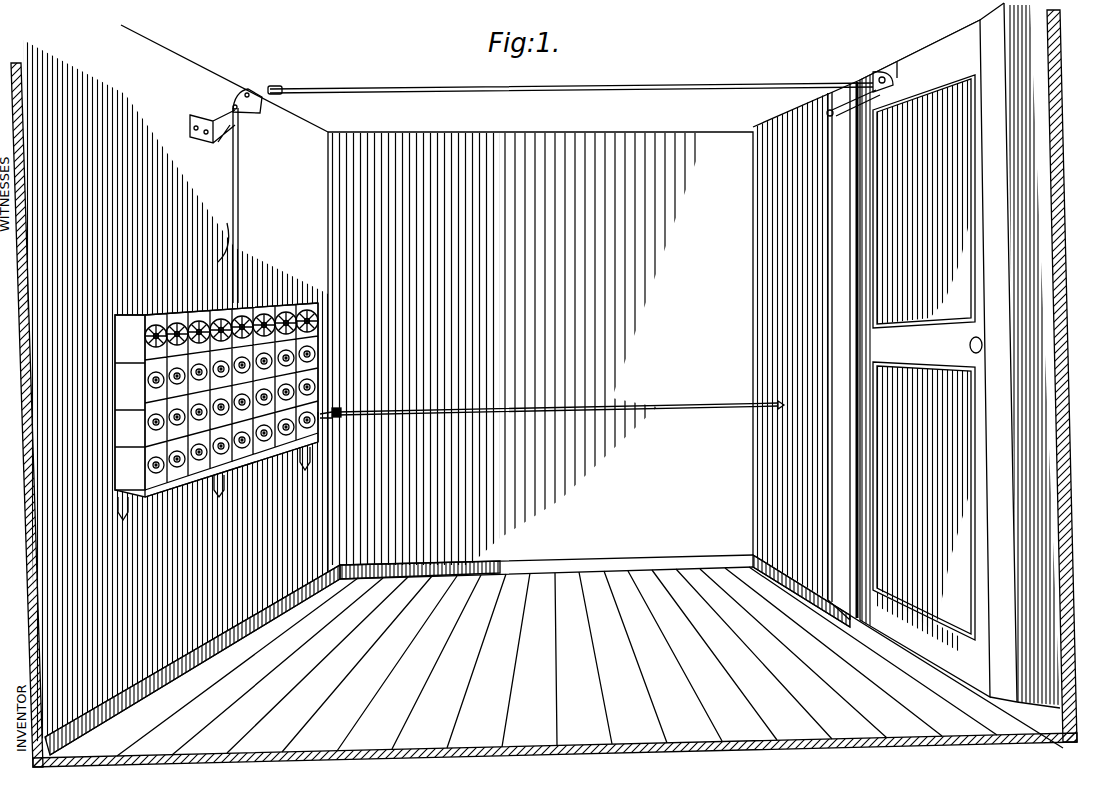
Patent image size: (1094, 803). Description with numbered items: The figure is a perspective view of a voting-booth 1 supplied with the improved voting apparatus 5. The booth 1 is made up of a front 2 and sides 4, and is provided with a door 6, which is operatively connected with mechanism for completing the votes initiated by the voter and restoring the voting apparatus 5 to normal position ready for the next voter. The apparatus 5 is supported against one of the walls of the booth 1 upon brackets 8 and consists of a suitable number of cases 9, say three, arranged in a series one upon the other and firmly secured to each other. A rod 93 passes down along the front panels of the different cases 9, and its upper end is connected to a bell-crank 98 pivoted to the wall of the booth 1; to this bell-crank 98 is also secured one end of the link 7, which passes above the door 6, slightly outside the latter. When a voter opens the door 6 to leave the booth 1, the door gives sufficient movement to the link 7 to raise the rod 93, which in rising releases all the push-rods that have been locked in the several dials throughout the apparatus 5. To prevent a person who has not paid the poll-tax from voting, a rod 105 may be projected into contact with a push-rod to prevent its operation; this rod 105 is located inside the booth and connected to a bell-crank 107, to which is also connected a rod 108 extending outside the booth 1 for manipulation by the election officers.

The voting-booth 1 is at (521, 444).
The front 2 is at (1042, 302).
The sides 4 is at (514, 356).
The voting apparatus 5 is at (203, 400).
The door 6 is at (937, 361).
The link 7 is at (558, 92).
The brackets 8 is at (302, 470).
The cases 9 is at (120, 337).
The rod 93 is at (240, 212).
The bell-crank 98 is at (247, 89).
The rod 105 is at (337, 408).
The bell-crank 107 is at (342, 420).
The rod 108 is at (560, 419).